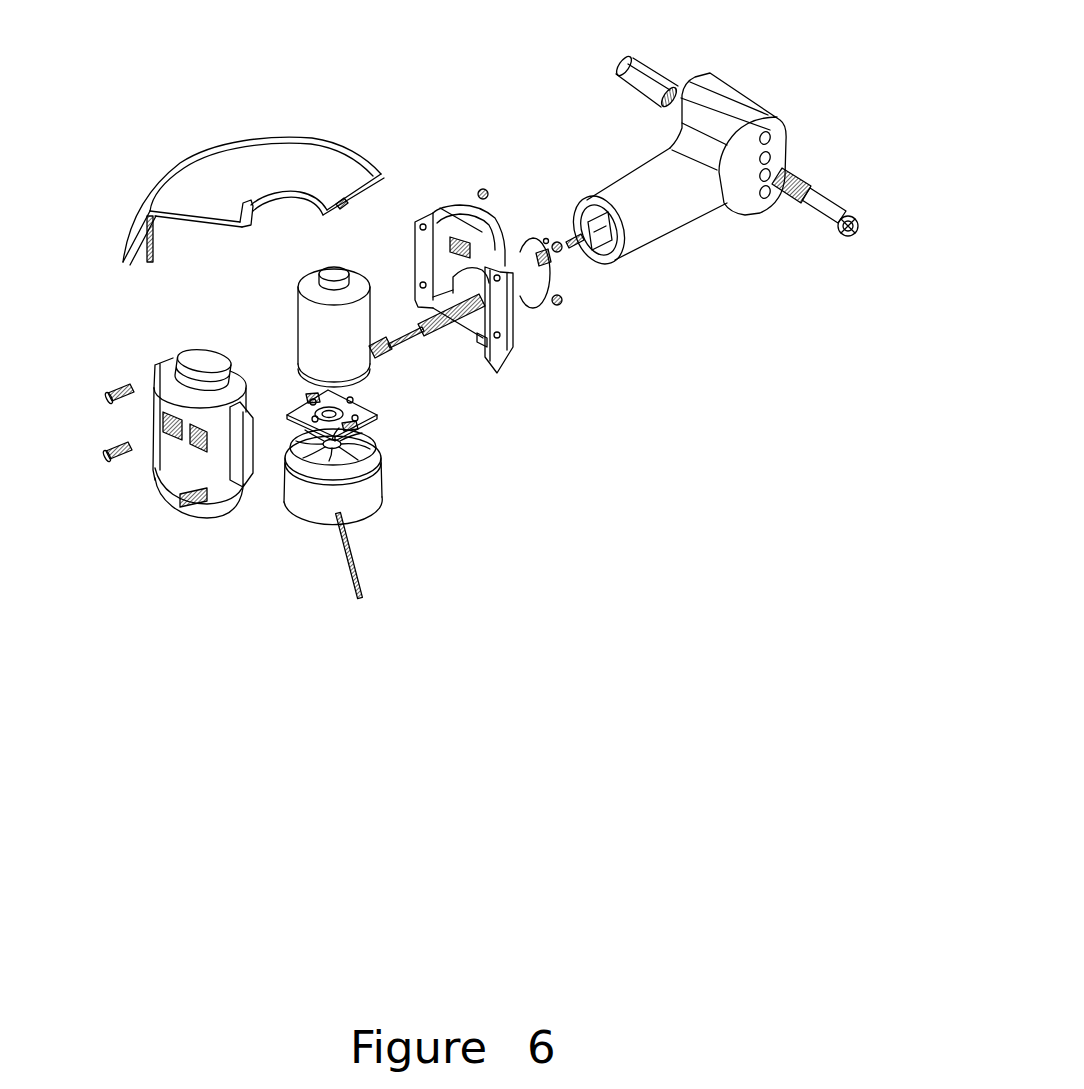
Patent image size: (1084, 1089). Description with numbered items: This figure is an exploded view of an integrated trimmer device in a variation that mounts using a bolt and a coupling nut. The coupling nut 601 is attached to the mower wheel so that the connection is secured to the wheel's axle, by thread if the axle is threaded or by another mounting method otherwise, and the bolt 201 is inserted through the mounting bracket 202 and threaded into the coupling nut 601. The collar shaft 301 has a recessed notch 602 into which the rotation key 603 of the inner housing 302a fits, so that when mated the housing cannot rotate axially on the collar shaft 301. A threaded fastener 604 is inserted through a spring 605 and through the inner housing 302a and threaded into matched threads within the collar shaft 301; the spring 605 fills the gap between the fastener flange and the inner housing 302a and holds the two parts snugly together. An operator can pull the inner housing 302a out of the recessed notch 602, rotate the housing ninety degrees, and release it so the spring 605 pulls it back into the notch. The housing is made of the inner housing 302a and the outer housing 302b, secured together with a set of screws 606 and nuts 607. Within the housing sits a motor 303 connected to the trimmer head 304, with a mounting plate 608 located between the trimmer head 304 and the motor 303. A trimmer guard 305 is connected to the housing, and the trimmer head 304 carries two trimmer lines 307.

The bolt 201 is at (857, 237).
The mounting bracket 202 is at (790, 141).
The collar shaft 301 is at (680, 232).
The inner housing 302a is at (528, 320).
The outer housing 302b is at (212, 520).
The motor 303 is at (300, 308).
The trimmer head 304 is at (370, 522).
The trimmer guard 305 is at (318, 158).
The trimmer lines 307 is at (357, 570).
The coupling nut 601 is at (653, 63).
The recessed notch 602 is at (623, 262).
The rotation key 603 is at (545, 236).
The threaded fastener 604 is at (401, 352).
The spring 605 is at (449, 318).
The screws 606 is at (117, 387).
The nuts 607 is at (482, 186).
The mounting plate 608 is at (370, 427).